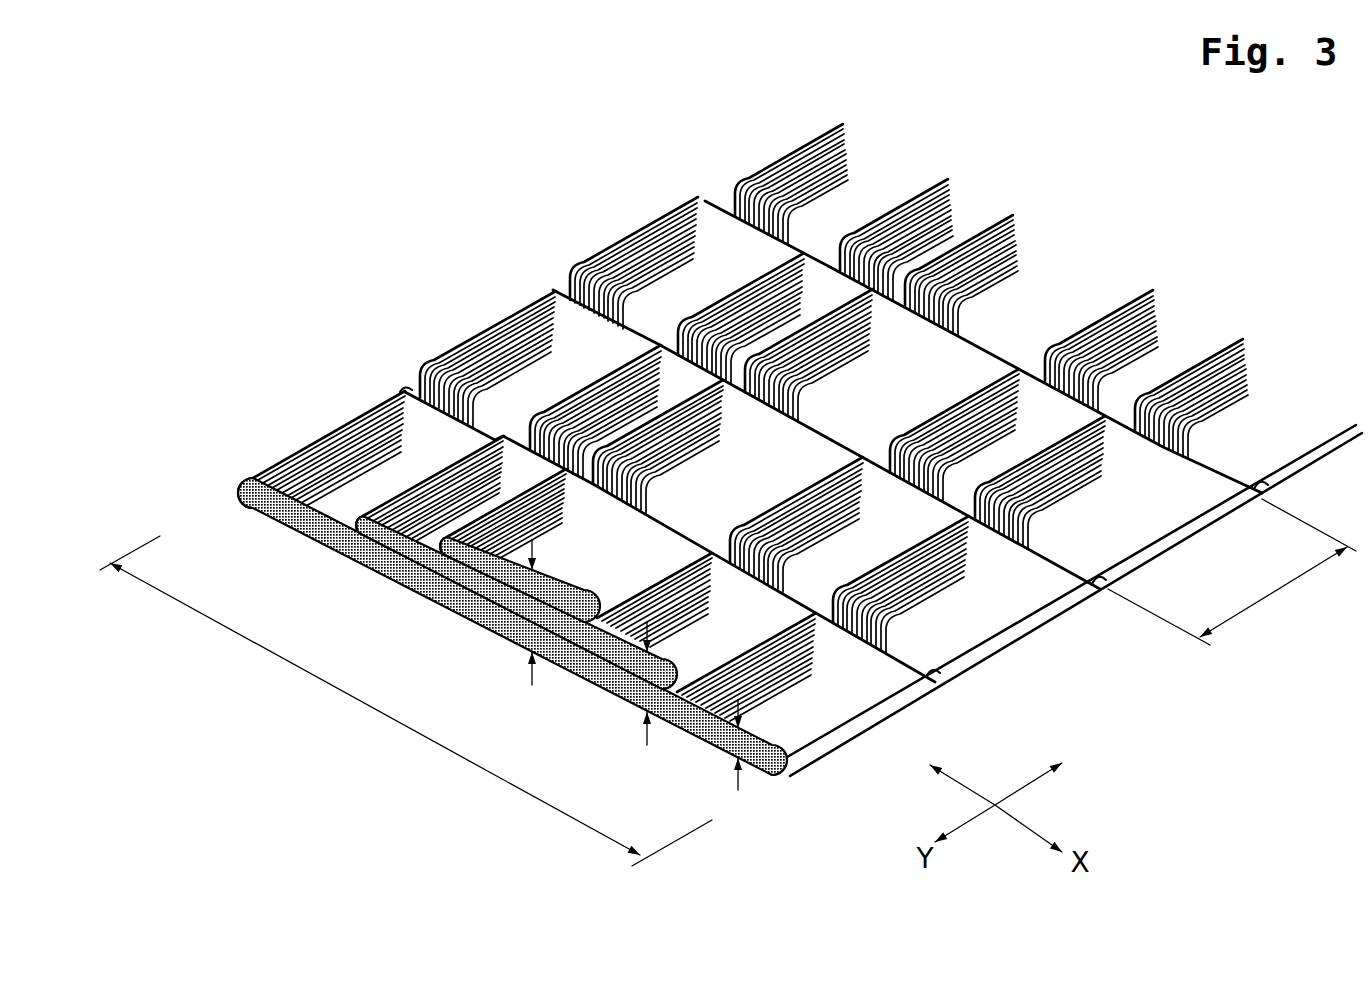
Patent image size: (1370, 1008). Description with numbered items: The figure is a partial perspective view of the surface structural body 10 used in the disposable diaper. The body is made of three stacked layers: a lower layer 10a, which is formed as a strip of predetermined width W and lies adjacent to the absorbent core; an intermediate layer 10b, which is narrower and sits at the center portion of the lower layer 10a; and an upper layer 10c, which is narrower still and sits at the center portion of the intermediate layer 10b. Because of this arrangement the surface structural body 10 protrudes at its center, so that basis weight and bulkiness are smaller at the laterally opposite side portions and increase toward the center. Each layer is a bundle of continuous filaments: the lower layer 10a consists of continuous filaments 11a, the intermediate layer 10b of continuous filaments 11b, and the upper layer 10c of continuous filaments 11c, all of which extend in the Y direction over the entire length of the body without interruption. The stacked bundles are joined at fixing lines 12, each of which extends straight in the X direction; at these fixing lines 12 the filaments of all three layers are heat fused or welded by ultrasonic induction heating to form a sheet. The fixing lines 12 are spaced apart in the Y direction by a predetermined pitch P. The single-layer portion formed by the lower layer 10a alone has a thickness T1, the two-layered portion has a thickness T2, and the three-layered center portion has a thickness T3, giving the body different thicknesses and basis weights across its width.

The surface structural body 10 is at (1062, 644).
The lower layer 10a is at (580, 665).
The intermediate layer 10b is at (484, 617).
The upper layer 10c is at (470, 597).
The continuous filaments 11a is at (300, 517).
The continuous filaments 11b is at (395, 562).
The continuous filaments 11c is at (432, 580).
The fixing lines 12 is at (792, 232).
The thickness T1 is at (718, 752).
The thickness T2 is at (617, 690).
The thickness T3 is at (520, 676).
The width W is at (406, 701).
The pitch P is at (1232, 572).